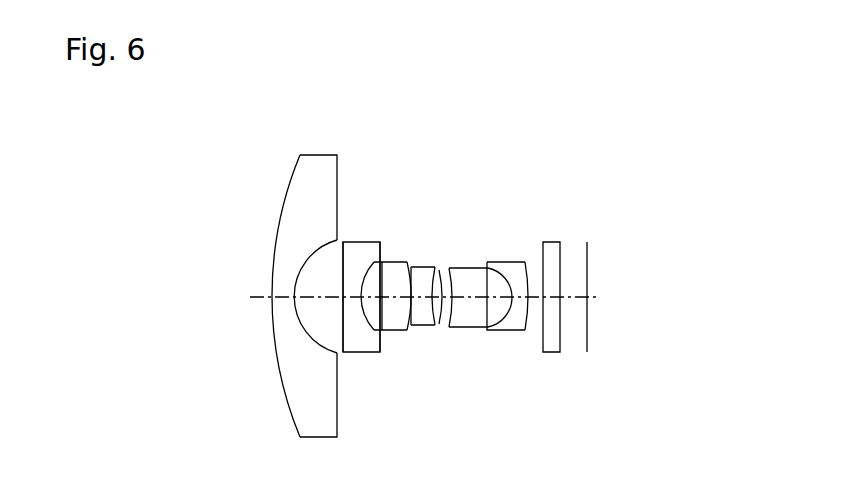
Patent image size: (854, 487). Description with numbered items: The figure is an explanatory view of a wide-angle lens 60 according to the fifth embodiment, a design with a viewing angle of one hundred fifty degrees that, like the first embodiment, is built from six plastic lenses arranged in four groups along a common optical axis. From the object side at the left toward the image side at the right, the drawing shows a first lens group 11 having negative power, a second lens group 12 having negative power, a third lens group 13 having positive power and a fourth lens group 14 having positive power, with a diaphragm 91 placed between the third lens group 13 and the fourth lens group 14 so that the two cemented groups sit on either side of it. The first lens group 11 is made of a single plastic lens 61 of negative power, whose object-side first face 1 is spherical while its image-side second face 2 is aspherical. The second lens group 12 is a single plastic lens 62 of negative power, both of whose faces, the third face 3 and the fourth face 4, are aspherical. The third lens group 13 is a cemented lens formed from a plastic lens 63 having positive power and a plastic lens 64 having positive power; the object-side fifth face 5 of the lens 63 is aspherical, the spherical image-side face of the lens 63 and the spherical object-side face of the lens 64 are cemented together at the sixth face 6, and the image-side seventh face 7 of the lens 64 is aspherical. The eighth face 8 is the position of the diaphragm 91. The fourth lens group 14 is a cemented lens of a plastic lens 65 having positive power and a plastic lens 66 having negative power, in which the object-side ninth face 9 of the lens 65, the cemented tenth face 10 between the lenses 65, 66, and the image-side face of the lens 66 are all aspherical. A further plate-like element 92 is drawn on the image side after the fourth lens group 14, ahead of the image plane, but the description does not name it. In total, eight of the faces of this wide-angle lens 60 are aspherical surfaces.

The wide-angle lens 60 is at (554, 138).
The first lens group 11 is at (261, 296).
The plastic lens 61 is at (311, 182).
The second lens group 12 is at (316, 267).
The plastic lens 62 is at (360, 242).
The third lens group 13 is at (447, 171).
The plastic lens 63 is at (398, 262).
The plastic lens 64 is at (420, 267).
The fourth lens group 14 is at (543, 171).
The plastic lens 65 is at (450, 268).
The plastic lens 66 is at (505, 262).
The diaphragm 91 is at (443, 266).
The cover glass / filter 92 is at (550, 242).
The lens surface 1 is at (273, 312).
The second face 2 is at (301, 328).
The third face 3 is at (343, 332).
The fourth face 4 is at (367, 325).
The fifth face 5 is at (384, 310).
The lens surface 6 is at (412, 310).
The seventh face 7 is at (438, 309).
The lens surface 8 is at (442, 307).
The ninth face 9 is at (450, 308).
The tenth face 10 is at (500, 310).